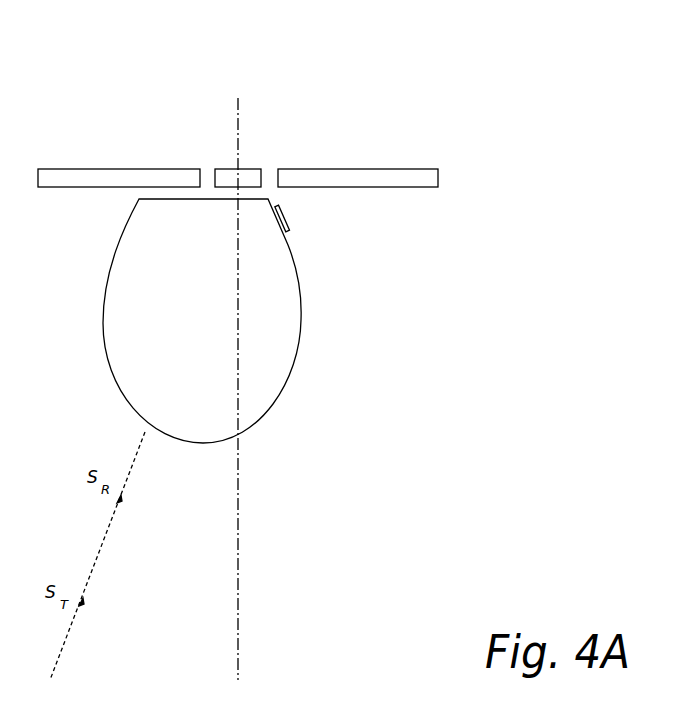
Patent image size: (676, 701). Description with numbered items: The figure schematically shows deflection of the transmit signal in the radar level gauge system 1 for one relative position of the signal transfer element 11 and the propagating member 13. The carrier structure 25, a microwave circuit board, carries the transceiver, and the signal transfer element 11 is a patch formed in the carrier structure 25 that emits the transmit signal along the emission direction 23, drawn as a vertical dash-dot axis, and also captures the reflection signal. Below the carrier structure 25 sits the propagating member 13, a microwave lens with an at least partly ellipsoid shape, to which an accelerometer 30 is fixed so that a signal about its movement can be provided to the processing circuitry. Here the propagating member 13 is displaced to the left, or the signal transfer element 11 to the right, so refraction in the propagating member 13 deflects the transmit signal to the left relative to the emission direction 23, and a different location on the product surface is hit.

The radar level gauge system 1 is at (371, 89).
The signal transfer element 11 is at (244, 176).
The propagating member 13 is at (302, 312).
The emission direction 23 is at (238, 122).
The carrier structure 25 is at (407, 176).
The accelerometer 30 is at (285, 214).